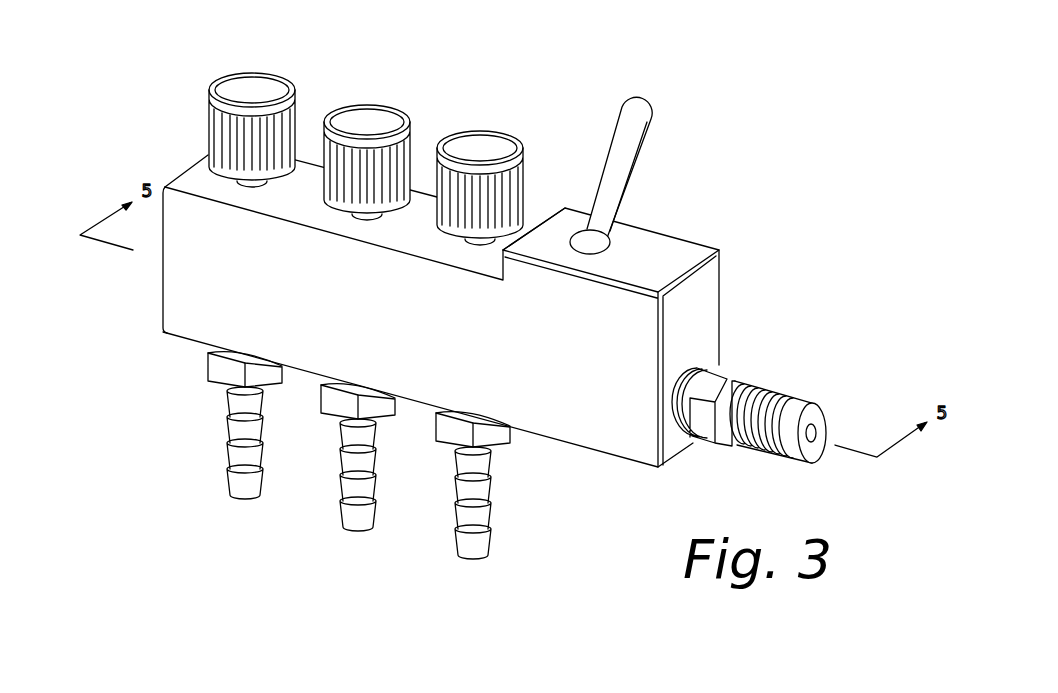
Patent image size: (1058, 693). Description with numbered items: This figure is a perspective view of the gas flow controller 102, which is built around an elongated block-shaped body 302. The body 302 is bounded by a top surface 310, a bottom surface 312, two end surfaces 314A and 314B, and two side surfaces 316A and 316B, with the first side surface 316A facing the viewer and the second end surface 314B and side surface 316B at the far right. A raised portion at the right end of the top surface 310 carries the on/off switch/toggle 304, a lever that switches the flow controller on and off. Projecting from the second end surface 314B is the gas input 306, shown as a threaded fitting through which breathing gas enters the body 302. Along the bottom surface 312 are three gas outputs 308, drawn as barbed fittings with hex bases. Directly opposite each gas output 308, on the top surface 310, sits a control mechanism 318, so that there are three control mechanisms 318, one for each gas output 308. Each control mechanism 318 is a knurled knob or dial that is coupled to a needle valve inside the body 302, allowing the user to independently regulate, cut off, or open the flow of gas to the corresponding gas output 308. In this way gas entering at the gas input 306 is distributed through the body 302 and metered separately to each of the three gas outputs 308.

The gas flow controller 102 is at (457, 322).
The body 302 is at (443, 338).
The on/off switch/toggle 304 is at (617, 165).
The gas input 306 is at (787, 405).
The gas output 308 is at (243, 487).
The top surface 310 is at (662, 257).
The bottom surface 312 is at (560, 462).
The end surface 314A is at (135, 283).
The end surface 314B is at (695, 332).
The side surface 316A is at (213, 293).
The side surface 316B is at (730, 282).
The control mechanism 318 is at (249, 87).